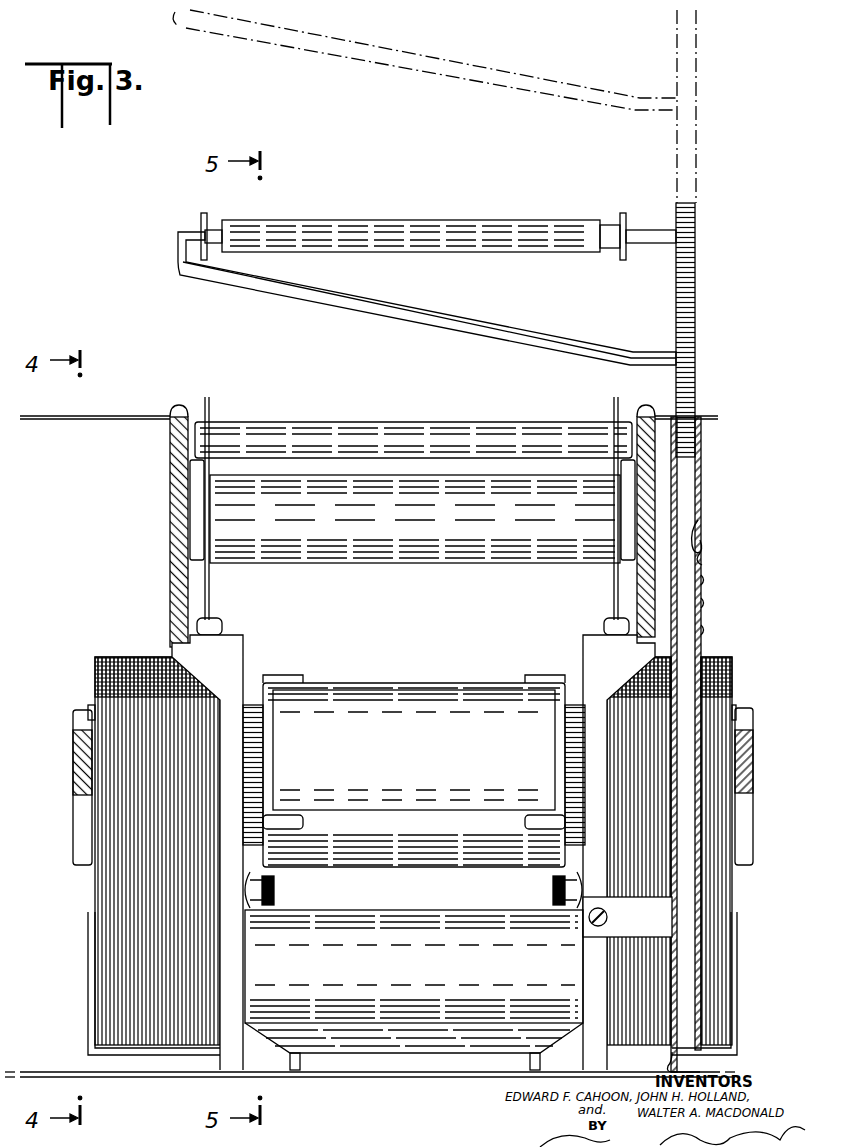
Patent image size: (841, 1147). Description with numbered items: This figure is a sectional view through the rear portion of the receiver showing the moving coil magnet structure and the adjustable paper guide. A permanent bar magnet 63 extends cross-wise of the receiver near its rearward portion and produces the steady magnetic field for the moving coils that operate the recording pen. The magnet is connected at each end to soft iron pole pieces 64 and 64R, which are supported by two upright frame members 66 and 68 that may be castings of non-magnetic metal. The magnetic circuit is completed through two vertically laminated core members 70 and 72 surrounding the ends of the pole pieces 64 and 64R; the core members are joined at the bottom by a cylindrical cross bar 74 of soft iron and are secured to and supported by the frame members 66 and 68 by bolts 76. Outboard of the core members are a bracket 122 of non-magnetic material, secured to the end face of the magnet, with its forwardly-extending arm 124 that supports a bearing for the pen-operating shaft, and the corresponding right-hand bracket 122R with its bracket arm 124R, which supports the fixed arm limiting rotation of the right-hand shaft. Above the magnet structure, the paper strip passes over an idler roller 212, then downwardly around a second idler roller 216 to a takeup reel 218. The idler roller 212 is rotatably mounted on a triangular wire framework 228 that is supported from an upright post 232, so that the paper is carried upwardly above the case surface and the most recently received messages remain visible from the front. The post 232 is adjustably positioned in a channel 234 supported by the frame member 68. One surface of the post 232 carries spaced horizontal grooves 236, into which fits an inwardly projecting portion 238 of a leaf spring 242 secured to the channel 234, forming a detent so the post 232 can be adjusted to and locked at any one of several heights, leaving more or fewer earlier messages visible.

The permanent bar magnet 63 is at (396, 720).
The soft iron pole piece 64 is at (90, 705).
The soft iron pole piece 64R is at (575, 748).
The upright frame member 66 is at (235, 663).
The upright frame member 68 is at (590, 663).
The vertically laminated core member 70 is at (112, 887).
The vertically laminated core member 72 is at (720, 883).
The cylindrical cross bar 74 is at (88, 972).
The bolt 76 is at (274, 890).
The bracket 122 is at (80, 826).
The bracket 122R is at (746, 836).
The forwardly-extending arm 124 is at (76, 752).
The bracket arm 124R is at (752, 757).
The idler roller 212 is at (416, 232).
The second idler roller 216 is at (392, 438).
The takeup reel 218 is at (420, 540).
The triangular wire framework 228 is at (400, 62).
The upright post 232 is at (693, 140).
The channel 234 is at (700, 478).
The horizontal grooves 236 is at (703, 513).
The inwardly projecting portion 238 is at (704, 550).
The leaf spring 242 is at (705, 596).